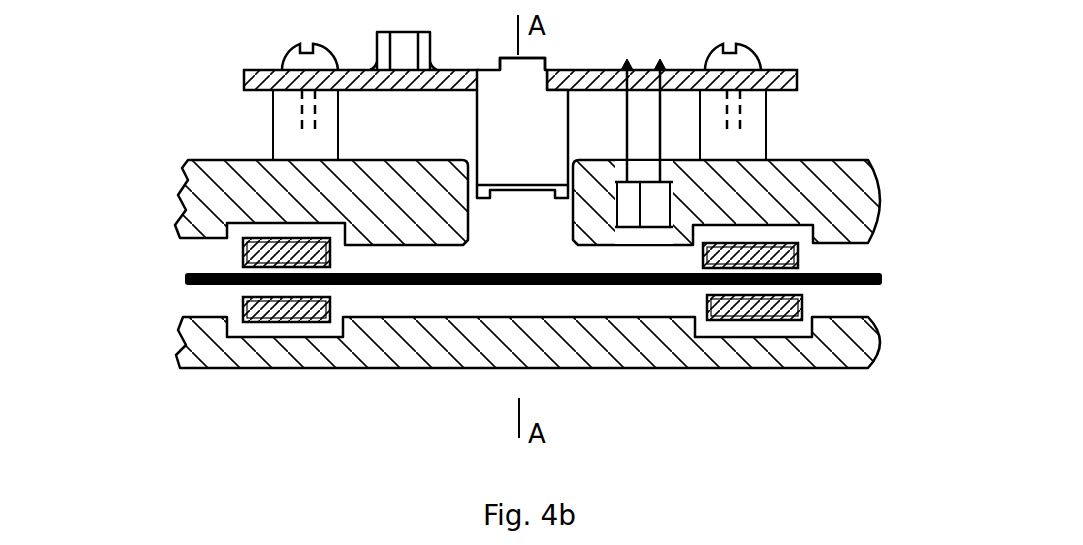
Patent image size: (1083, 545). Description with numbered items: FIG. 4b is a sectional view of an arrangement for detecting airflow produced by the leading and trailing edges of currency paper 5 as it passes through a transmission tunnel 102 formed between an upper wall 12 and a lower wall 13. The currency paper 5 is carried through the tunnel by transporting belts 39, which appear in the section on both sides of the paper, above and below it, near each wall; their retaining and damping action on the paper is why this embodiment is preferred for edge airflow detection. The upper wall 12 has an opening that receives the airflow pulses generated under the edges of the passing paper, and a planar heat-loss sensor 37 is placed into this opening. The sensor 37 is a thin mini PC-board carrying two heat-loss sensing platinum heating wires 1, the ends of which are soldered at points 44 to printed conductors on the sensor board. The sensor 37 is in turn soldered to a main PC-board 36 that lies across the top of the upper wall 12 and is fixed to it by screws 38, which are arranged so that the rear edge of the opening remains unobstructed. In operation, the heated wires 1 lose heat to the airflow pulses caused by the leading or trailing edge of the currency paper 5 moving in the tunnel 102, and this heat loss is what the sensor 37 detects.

The heating wires 1 is at (523, 185).
The currency paper 5 is at (196, 273).
The upper wall 12 is at (235, 170).
The lower wall 13 is at (215, 360).
The PC-board 36 is at (598, 78).
The planar heat-loss sensor 37 is at (527, 68).
The screws 38 is at (743, 57).
The transporting belts 39 is at (242, 302).
The soldering points 44 is at (631, 175).
The transmission tunnel 102 is at (512, 298).